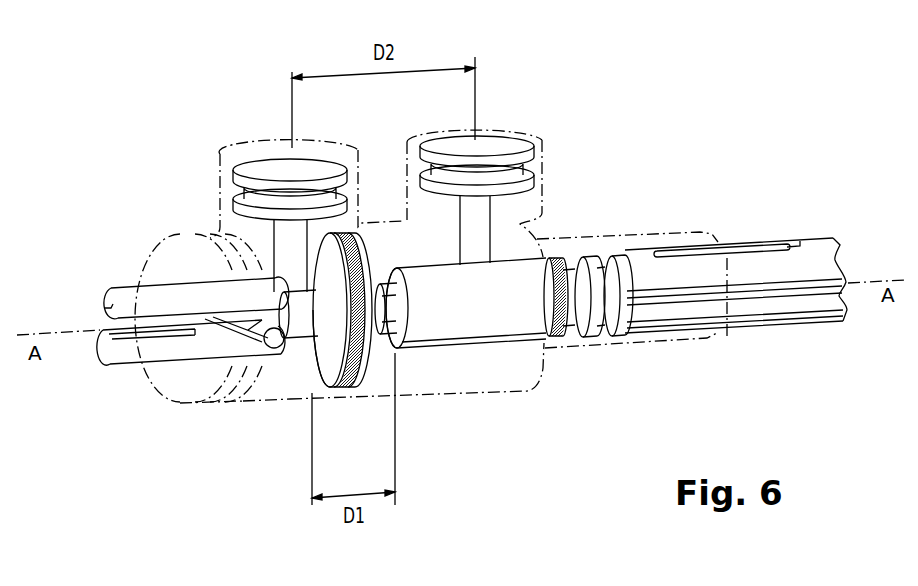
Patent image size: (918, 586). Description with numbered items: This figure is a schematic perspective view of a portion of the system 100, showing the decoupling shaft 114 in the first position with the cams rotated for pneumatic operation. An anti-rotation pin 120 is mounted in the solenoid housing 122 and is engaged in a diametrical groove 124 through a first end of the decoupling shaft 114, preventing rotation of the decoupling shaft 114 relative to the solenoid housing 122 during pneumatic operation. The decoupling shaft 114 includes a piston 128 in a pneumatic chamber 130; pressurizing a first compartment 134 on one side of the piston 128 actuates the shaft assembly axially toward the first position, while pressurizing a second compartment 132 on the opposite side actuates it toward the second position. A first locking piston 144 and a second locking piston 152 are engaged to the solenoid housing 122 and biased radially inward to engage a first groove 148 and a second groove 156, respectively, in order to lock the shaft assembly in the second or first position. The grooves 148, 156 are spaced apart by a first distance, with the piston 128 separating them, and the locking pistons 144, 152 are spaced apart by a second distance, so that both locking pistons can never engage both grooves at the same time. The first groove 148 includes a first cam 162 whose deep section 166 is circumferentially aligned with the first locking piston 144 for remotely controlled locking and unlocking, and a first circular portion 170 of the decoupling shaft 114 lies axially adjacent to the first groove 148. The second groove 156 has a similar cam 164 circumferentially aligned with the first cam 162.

The system 100 is at (98, 158).
The decoupling shaft 114 is at (806, 251).
The anti-rotation pin 120 is at (243, 330).
The solenoid housing 122 is at (632, 290).
The diametrical groove 124 is at (97, 321).
The piston 128 is at (294, 368).
The pneumatic chamber 130 is at (527, 363).
The second compartment 132 is at (270, 388).
The first compartment 134 is at (466, 366).
The first locking piston 144 is at (498, 146).
The first groove 148 is at (407, 360).
The second locking piston 152 is at (259, 168).
The second groove 156 is at (312, 358).
The first cam 162 is at (396, 315).
The cam 164 is at (298, 317).
The deep section 166 is at (385, 262).
The first circular portion 170 is at (526, 307).